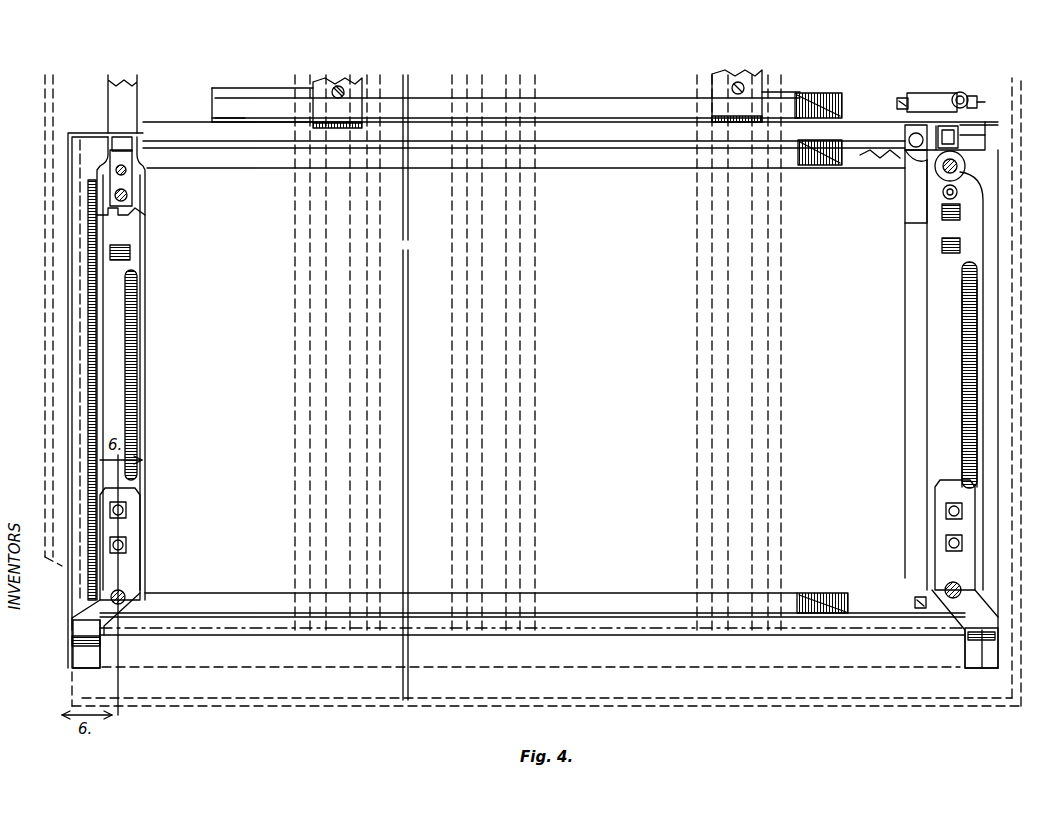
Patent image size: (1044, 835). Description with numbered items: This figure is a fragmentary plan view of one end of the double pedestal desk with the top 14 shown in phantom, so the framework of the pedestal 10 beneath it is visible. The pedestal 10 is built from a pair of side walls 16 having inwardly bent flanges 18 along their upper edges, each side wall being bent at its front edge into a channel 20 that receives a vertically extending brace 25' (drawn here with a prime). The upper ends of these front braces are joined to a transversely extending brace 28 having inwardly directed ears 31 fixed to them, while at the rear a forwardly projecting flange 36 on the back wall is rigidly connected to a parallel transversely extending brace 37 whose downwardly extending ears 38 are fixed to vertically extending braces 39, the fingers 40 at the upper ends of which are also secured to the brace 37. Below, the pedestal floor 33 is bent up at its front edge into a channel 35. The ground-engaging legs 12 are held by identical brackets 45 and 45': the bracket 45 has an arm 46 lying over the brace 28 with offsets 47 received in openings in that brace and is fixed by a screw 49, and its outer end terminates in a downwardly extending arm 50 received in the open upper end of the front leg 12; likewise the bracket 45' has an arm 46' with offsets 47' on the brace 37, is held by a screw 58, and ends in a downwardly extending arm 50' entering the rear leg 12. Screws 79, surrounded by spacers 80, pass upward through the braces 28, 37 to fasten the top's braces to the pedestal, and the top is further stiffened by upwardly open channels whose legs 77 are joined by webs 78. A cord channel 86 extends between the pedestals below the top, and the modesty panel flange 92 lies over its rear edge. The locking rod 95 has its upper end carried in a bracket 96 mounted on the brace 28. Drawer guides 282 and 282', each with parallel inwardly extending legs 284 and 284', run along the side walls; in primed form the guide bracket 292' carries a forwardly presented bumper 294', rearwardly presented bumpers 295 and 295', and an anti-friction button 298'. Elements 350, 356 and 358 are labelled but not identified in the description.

The pedestal 10 is at (352, 640).
The ground-engaging leg 12 is at (102, 650).
The top 14 is at (722, 690).
The side wall 16 is at (86, 130).
The inwardly bent flange 18 is at (600, 150).
The channel 20 is at (990, 140).
The lug 25' is at (937, 159).
The transversely extending brace 28 is at (935, 322).
The inwardly directed ear 31 is at (944, 143).
The pedestal floor 33 is at (626, 350).
The channel 35 is at (995, 376).
The forwardly projecting flange 36 is at (90, 297).
The transversely extending brace 37 is at (138, 384).
The downwardly extending ear 38 is at (140, 140).
The vertically extending brace 39 is at (122, 137).
The finger 40 is at (113, 188).
The bracket 45 is at (908, 567).
The bracket 45' is at (163, 566).
The arm 46 is at (905, 537).
The arm 46' is at (155, 540).
The offset 47 is at (906, 500).
The offset 47' is at (144, 544).
The screw 49 is at (944, 588).
The downwardly extending arm 50 is at (966, 648).
The downwardly extending arm 50' is at (105, 655).
The screw 58 is at (126, 594).
The leg 77 is at (762, 355).
The web 78 is at (740, 312).
The screw 79 is at (946, 172).
The spacer 80 is at (946, 198).
The cord channel 86 is at (212, 112).
The flange 92 is at (108, 88).
The rod 95 is at (917, 134).
The bracket 96 is at (908, 200).
The guide 282 is at (445, 386).
The upper channel 282' is at (436, 91).
The leg 284 is at (428, 384).
The upper channel flange 284' is at (528, 90).
The latch bar 292' is at (940, 86).
The latch tab 294' is at (992, 102).
The bumper 295 is at (877, 588).
The stop tab 295' is at (881, 85).
The latch roller 298' is at (985, 84).
The slide bar 350 is at (330, 92).
The hatched pad 356 is at (790, 150).
The slide block 358 is at (334, 92).